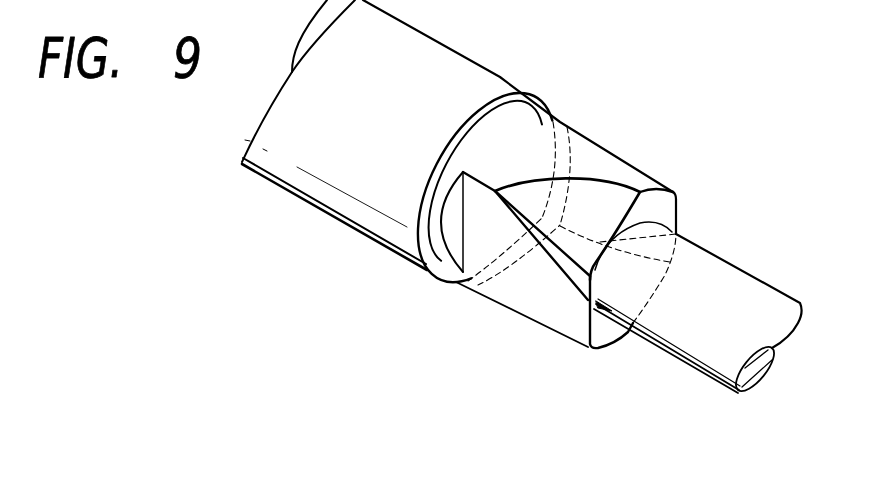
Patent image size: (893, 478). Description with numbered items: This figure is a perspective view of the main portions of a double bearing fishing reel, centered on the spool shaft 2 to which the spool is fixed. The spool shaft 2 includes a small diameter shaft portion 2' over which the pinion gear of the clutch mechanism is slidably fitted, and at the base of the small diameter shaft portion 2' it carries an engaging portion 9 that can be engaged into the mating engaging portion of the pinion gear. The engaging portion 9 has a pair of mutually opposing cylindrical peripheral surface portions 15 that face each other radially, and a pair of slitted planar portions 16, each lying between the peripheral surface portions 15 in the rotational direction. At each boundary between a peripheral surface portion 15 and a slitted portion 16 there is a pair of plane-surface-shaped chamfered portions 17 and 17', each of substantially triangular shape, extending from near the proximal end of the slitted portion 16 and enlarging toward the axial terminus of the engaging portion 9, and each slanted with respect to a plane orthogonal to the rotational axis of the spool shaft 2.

The spool shaft 2 is at (457, 142).
The small diameter shaft portion 2' is at (698, 287).
The engaging portion 9 is at (663, 210).
The cylindrical peripheral surface portion 15 is at (647, 180).
The slitted planar portion 16 is at (514, 287).
The chamfered portion 17 is at (618, 194).
The chamfered portion 17' is at (526, 283).